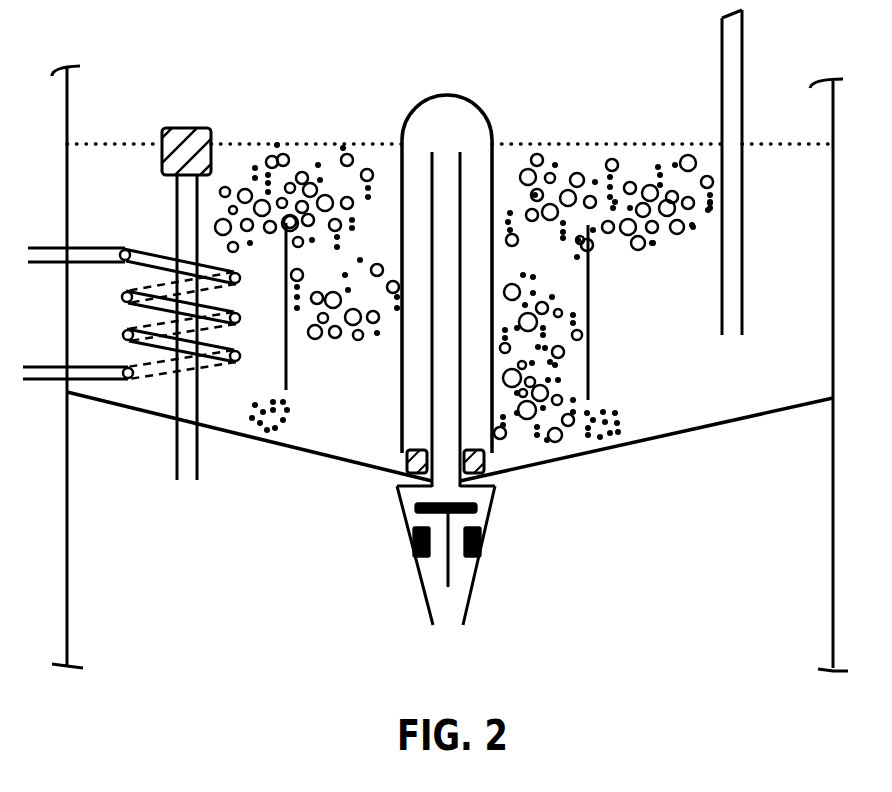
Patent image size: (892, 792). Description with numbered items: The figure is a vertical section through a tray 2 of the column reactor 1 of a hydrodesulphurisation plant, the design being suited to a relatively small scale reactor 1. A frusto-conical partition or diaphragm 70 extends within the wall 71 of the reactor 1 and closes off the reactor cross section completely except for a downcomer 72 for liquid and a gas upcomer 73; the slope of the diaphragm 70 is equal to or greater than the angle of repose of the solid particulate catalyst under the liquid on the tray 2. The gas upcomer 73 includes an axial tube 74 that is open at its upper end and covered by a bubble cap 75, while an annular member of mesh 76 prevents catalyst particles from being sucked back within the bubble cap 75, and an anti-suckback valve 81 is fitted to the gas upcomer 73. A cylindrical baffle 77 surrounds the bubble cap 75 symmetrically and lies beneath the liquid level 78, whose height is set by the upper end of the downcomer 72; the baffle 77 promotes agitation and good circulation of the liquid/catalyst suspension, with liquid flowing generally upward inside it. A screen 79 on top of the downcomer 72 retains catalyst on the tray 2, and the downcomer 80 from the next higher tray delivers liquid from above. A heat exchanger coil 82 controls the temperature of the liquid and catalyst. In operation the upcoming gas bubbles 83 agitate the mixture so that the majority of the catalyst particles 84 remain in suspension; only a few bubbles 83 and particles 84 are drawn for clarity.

The reactor 1 is at (834, 533).
The tray 2 is at (454, 368).
The frusto-conical partition or diaphragm 70 is at (708, 430).
The wall 71 is at (67, 558).
The downcomer 72 is at (197, 459).
The gas upcomer 73 is at (494, 496).
The axial tube 74 is at (463, 210).
The bubble cap 75 is at (485, 133).
The annular member of mesh 76 is at (487, 463).
The cylindrical baffle 77 is at (592, 347).
The liquid level 78 is at (773, 145).
The screen 79 is at (173, 128).
The downcomer from the next higher tray 80 is at (742, 68).
The anti-suckback valve 81 is at (415, 507).
The heat exchanger coil 82 is at (133, 302).
The bubbles of gas 83 is at (630, 185).
The catalyst particles 84 is at (652, 243).